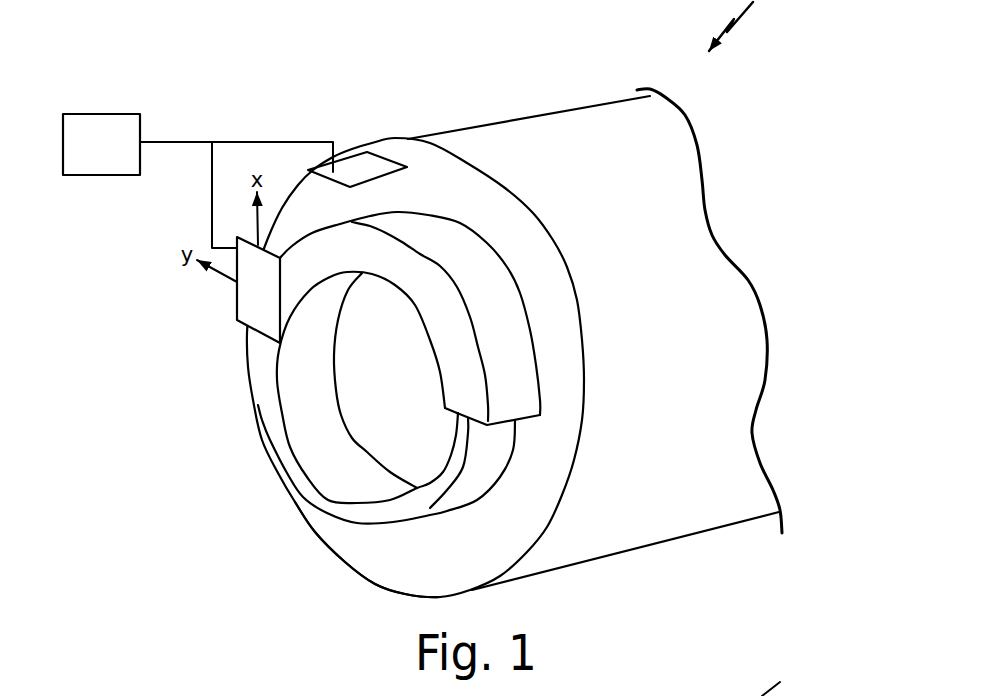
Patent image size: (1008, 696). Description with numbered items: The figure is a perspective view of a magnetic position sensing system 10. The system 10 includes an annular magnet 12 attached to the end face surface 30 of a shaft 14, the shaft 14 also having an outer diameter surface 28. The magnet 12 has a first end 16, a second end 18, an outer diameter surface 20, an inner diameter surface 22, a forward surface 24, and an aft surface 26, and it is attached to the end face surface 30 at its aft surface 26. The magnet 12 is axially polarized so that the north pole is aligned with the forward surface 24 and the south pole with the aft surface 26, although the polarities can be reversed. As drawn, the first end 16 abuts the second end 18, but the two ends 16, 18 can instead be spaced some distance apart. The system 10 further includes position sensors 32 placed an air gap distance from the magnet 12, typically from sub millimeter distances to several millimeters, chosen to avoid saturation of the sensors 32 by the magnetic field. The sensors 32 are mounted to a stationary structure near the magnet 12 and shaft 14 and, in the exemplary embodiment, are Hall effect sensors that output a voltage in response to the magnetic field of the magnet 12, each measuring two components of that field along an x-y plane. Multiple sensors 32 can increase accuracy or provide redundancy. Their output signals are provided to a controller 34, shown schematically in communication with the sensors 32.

The magnetic position sensing system 10 is at (755, 349).
The annular magnet 12 is at (220, 393).
The shaft 14 is at (681, 537).
The first end 16 is at (533, 424).
The second end 18 is at (455, 416).
The outer diameter surface 20 is at (437, 240).
The inner diameter surface 22 is at (315, 401).
The forward surface 24 is at (286, 442).
The aft surface 26 is at (343, 313).
The outer diameter surface 28 is at (693, 347).
The end face surface 30 is at (423, 548).
The position sensors 32 is at (377, 152).
The controller 34 is at (198, 181).